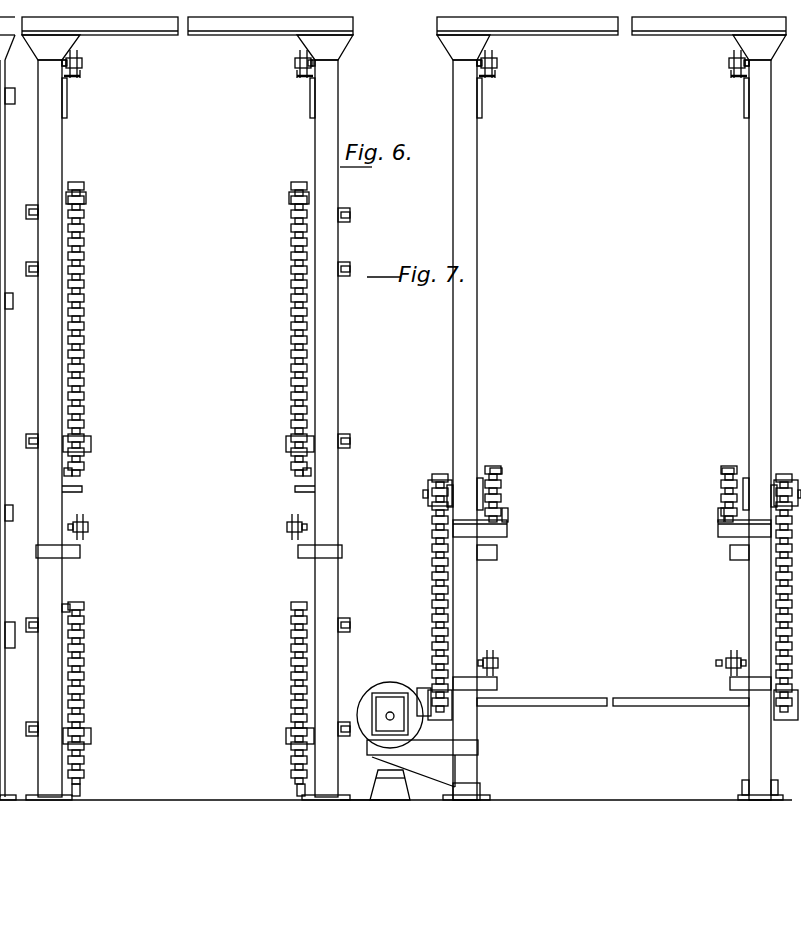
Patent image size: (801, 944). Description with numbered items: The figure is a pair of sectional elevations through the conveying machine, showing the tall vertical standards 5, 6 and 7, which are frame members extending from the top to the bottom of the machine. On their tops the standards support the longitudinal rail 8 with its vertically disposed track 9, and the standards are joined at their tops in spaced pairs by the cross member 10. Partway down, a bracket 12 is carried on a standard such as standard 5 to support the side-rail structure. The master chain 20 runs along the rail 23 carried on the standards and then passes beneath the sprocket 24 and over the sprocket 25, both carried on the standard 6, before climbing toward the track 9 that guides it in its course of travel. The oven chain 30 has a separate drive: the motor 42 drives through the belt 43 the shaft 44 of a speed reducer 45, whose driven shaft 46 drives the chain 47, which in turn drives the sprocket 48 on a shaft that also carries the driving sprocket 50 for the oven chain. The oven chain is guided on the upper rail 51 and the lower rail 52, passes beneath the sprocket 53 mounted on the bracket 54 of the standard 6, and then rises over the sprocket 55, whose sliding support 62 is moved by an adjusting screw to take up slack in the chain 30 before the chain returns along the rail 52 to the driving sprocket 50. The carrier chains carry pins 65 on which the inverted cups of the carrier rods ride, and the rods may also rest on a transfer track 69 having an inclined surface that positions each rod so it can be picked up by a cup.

In FIG. 7, the vertical standard 5 is at (470, 162).
In FIG. 6, the vertical standard 6 is at (56, 160).
In FIG. 6, the vertical standard 7 is at (7, 158).
In FIG. 6, the longitudinal rail 8 is at (66, 100).
In FIG. 7, the longitudinal rail 8 is at (484, 84).
In FIG. 6, the track 9 is at (80, 78).
In FIG. 7, the track 9 is at (495, 78).
In FIG. 6, the cross member 10 is at (162, 30).
In FIG. 7, the cross member 10 is at (596, 30).
In FIG. 7, the bracket 12 is at (508, 532).
In FIG. 6, the master chain 20 is at (80, 56).
In FIG. 7, the master chain 20 is at (496, 55).
In FIG. 6, the rail 23 is at (82, 786).
In FIG. 7, the rail 23 is at (498, 682).
In FIG. 6, the sprocket 24 is at (86, 730).
In FIG. 6, the sprocket 25 is at (86, 630).
In FIG. 6, the oven chain 30 is at (82, 282).
In FIG. 7, the oven chain 30 is at (492, 466).
In FIG. 7, the motor 42 is at (380, 770).
In FIG. 7, the belt 43 is at (382, 700).
In FIG. 7, the shaft 44 is at (376, 706).
In FIG. 7, the speed reducer 45 is at (391, 712).
In FIG. 7, the driven shaft 46 is at (590, 700).
In FIG. 7, the chain 47 is at (433, 537).
In FIG. 7, the sprocket 48 is at (432, 490).
In FIG. 7, the driving sprocket 50 is at (500, 482).
In FIG. 6, the upper rail 51 is at (82, 488).
In FIG. 6, the lower rail 52 is at (82, 540).
In FIG. 6, the sprocket 53 is at (82, 445).
In FIG. 6, the bracket 54 is at (30, 436).
In FIG. 6, the sprocket 55 is at (84, 207).
In FIG. 6, the sliding support 62 is at (30, 220).
In FIG. 6, the pin 65 is at (86, 70).
In FIG. 7, the pin 65 is at (500, 68).
In FIG. 7, the transfer track 69 is at (508, 516).